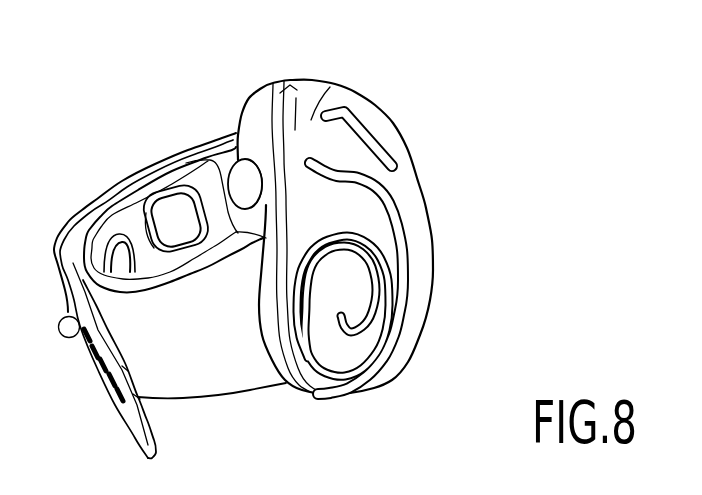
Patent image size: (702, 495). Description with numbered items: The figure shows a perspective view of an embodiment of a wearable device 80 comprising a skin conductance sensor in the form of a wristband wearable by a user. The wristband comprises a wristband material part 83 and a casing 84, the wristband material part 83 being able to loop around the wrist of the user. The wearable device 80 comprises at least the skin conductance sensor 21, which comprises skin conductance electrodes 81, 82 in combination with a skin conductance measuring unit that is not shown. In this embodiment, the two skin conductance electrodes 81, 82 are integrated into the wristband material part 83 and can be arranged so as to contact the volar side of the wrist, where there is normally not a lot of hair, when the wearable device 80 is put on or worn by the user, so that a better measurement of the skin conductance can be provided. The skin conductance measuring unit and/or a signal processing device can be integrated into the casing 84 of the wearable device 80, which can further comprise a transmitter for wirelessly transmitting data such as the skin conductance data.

The wearable device 80 is at (279, 247).
The skin conductance sensor 21 is at (137, 155).
The skin conductance electrode 81 is at (122, 258).
The skin conductance electrode 82 is at (172, 228).
The wristband material part 83 is at (215, 373).
The casing 84 is at (417, 223).